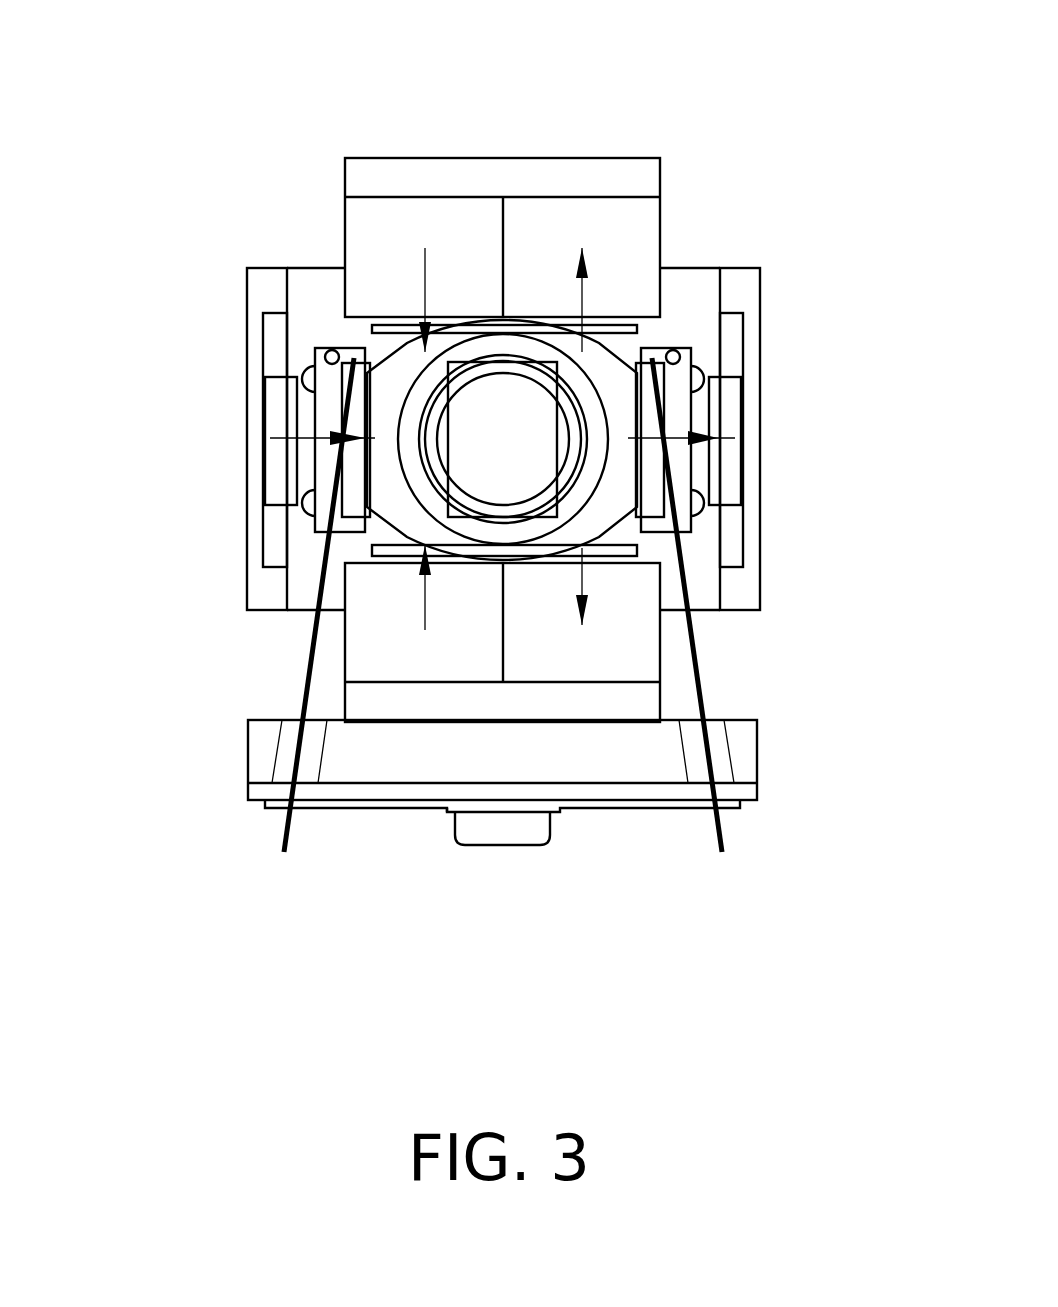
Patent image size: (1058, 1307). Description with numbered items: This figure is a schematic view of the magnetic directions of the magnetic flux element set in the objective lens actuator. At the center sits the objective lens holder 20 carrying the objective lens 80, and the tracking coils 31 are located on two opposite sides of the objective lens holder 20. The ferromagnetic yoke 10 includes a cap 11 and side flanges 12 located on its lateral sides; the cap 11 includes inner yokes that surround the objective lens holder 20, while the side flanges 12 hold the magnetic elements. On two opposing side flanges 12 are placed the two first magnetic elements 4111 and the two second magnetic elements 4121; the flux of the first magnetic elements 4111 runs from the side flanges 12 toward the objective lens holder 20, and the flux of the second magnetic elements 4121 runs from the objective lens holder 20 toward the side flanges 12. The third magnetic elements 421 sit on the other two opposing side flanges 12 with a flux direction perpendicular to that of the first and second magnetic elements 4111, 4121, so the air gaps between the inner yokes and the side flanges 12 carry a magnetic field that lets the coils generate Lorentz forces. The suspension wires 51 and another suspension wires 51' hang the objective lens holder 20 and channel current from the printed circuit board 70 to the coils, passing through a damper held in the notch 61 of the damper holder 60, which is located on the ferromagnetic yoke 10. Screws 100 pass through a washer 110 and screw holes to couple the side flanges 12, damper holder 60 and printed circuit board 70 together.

The ferromagnetic yoke 10 is at (787, 578).
The cap 11 is at (393, 373).
The side flanges 12 is at (640, 180).
The objective lens holder 20 is at (665, 372).
The tracking coils 31 is at (625, 338).
The objective lens 80 is at (462, 427).
The third magnetic elements 421 is at (282, 468).
The first magnetic elements 4111 is at (395, 225).
The second magnetic elements 4121 is at (545, 225).
The suspension wires 51 is at (233, 605).
The another suspension wires 51' is at (791, 605).
The damper holder 60 is at (262, 738).
The notch 61 is at (285, 770).
The printed circuit board 70 is at (632, 815).
The screws 100 is at (507, 827).
The washer 110 is at (450, 805).